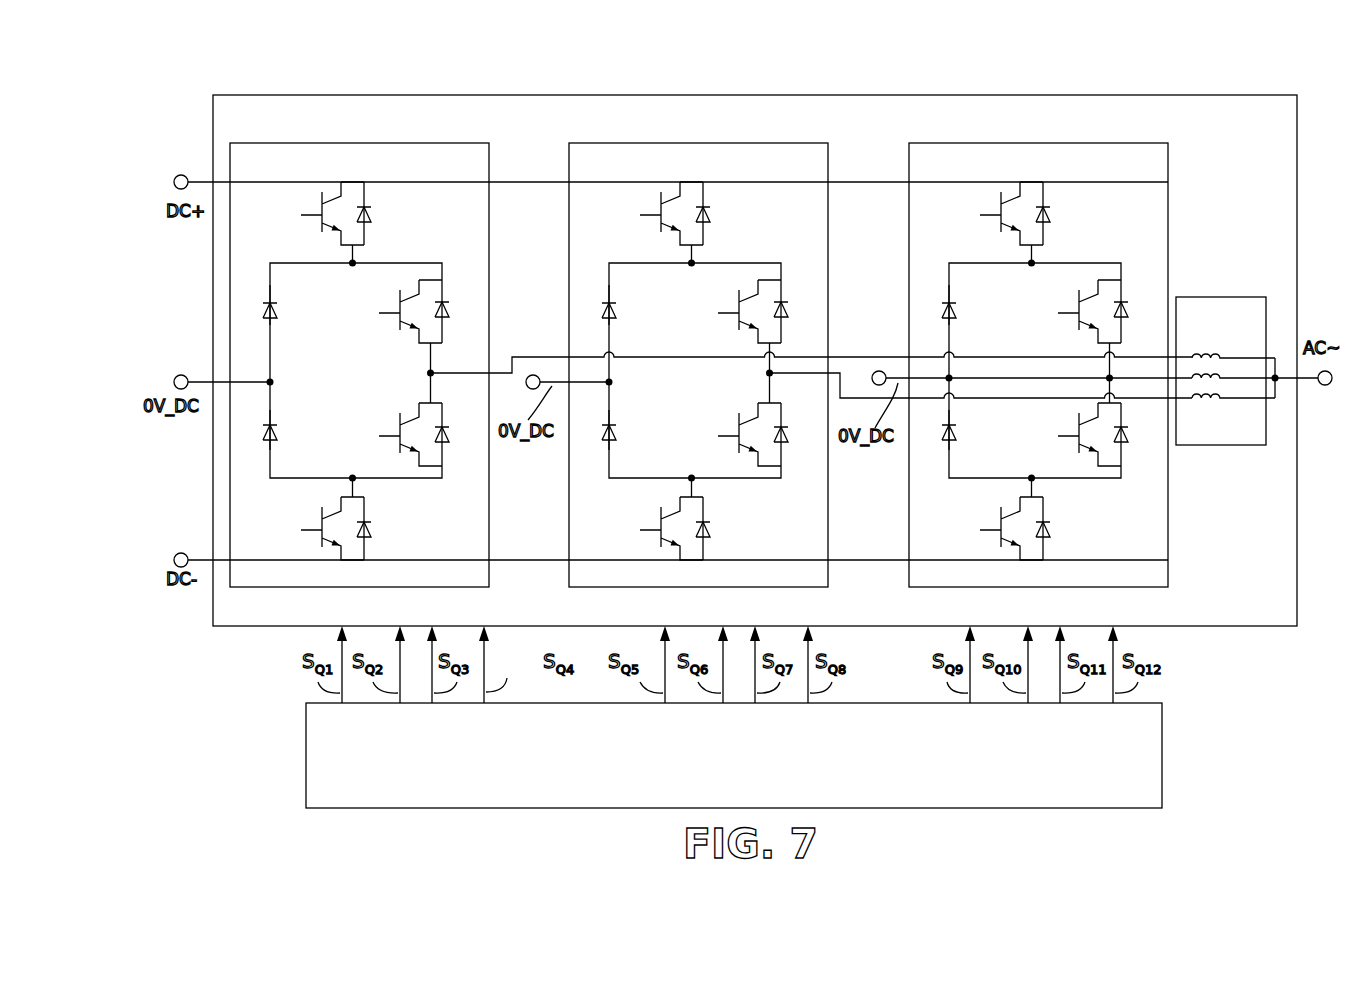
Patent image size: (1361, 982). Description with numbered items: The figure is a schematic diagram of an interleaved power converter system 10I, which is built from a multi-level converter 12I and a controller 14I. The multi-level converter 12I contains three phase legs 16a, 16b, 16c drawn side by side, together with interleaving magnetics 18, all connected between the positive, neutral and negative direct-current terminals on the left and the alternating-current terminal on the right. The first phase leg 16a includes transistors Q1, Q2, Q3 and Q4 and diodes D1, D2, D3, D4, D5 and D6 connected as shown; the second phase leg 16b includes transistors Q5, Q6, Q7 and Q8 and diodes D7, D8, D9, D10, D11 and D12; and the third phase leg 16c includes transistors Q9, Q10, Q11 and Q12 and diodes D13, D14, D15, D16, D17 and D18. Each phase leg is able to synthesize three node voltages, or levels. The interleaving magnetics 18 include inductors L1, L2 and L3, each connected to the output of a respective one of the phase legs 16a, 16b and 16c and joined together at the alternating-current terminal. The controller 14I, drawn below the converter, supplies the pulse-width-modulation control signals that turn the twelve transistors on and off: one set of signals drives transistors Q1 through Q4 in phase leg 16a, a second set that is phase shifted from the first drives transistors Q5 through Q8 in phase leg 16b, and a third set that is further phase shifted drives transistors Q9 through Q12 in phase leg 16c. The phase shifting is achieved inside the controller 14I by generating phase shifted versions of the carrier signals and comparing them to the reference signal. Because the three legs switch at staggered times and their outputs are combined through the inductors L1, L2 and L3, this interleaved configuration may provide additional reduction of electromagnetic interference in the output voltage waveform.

The interleaved power converter system 10I is at (234, 57).
The multi-level converter 12I is at (278, 95).
The controller 14I is at (306, 742).
The phase leg 16a is at (393, 143).
The phase leg 16b is at (732, 143).
The phase leg 16c is at (1070, 143).
The interleaving magnetics 18 is at (1205, 297).
The transistor Q1 is at (320, 217).
The transistor Q2 is at (398, 313).
The transistor Q3 is at (396, 438).
The transistor Q4 is at (330, 546).
The transistor Q5 is at (661, 216).
The transistor Q6 is at (736, 313).
The transistor Q7 is at (734, 434).
The transistor Q8 is at (653, 528).
The transistor Q9 is at (1001, 216).
The transistor Q10 is at (1074, 313).
The transistor Q11 is at (1071, 434).
The transistor Q12 is at (991, 528).
The diode D1 is at (372, 214).
The diode D2 is at (470, 300).
The diode D3 is at (451, 441).
The diode D4 is at (373, 535).
The diode D5 is at (263, 313).
The diode D6 is at (264, 433).
The diode D7 is at (719, 216).
The diode D8 is at (796, 311).
The diode D9 is at (795, 438).
The diode D10 is at (725, 528).
The diode D11 is at (629, 303).
The diode D12 is at (628, 438).
The diode D13 is at (1063, 216).
The diode D14 is at (1139, 311).
The diode D15 is at (1139, 438).
The diode D16 is at (1064, 528).
The diode D17 is at (969, 303).
The diode D18 is at (968, 438).
The inductor L1 is at (1215, 352).
The inductor L2 is at (1224, 373).
The inductor L3 is at (1222, 401).